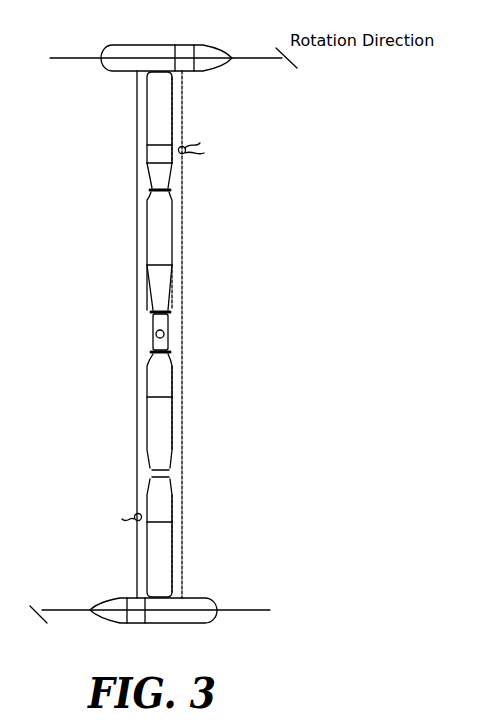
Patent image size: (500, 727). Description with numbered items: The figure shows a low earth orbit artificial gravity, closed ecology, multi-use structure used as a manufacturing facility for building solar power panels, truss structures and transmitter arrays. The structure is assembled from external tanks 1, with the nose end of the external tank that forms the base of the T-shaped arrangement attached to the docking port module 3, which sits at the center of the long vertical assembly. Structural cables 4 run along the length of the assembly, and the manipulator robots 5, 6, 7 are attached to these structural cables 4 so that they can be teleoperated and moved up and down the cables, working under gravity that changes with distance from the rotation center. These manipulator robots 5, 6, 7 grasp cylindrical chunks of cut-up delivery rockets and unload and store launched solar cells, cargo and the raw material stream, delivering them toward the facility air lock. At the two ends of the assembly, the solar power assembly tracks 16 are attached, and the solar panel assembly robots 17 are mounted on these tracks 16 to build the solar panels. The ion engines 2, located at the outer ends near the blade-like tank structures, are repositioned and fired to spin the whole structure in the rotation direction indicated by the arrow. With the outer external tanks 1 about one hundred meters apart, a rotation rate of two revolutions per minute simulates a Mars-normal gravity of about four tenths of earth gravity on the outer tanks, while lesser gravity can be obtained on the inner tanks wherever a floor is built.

The external tank 1 is at (113, 45).
The ion engines 2 is at (110, 73).
The docking port module 3 is at (168, 332).
The structural cables 4 is at (135, 105).
The manipulator robot 5 is at (190, 160).
The manipulator robot 6 is at (200, 143).
The manipulator robot 7 is at (204, 153).
The solar power assembly tracks 16 is at (50, 58).
The solar panel assembly robots 17 is at (270, 610).